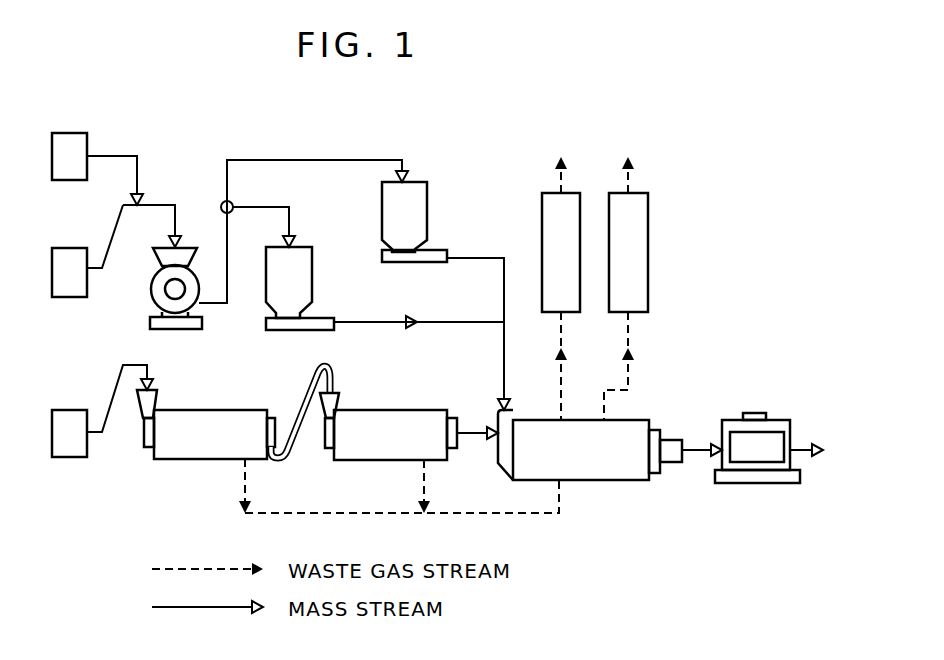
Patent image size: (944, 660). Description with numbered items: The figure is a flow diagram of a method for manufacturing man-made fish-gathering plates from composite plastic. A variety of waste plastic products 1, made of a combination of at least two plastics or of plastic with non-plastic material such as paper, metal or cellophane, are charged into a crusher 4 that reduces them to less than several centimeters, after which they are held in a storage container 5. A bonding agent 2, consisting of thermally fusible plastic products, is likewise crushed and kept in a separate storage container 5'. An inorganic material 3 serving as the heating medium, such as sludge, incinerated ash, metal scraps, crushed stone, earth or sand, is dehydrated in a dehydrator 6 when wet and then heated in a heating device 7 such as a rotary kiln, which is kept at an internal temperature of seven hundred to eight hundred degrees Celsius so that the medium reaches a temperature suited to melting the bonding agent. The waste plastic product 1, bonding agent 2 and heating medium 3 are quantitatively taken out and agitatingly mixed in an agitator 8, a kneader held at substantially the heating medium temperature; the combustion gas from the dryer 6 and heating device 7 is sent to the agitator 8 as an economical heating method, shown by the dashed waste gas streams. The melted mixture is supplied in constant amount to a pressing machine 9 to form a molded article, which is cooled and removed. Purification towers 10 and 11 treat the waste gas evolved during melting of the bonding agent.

The waste plastic product 1 is at (69, 272).
The bonding agent 2 is at (69, 156).
The inorganic material 3 is at (69, 433).
The crusher 4 is at (188, 252).
The storage container 5 is at (300, 272).
The storage container 5' is at (414, 206).
The dehydrator 6 is at (210, 416).
The heating device 7 is at (395, 415).
The agitator 8 is at (612, 478).
The pressing machine 9 is at (755, 483).
The purification tower 10 is at (545, 205).
The purification tower 11 is at (648, 203).